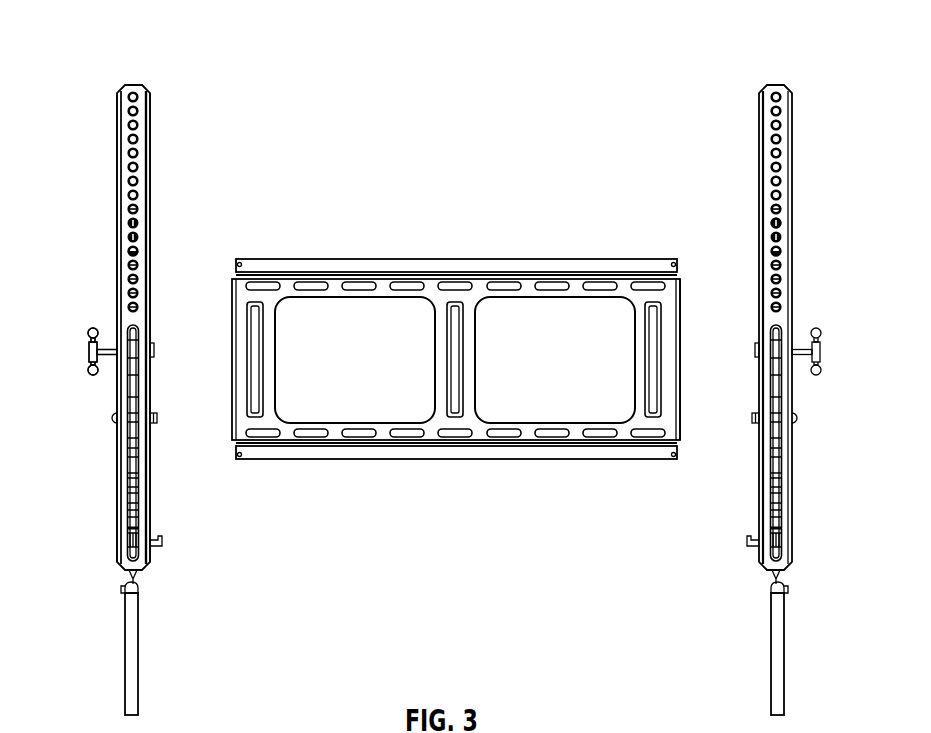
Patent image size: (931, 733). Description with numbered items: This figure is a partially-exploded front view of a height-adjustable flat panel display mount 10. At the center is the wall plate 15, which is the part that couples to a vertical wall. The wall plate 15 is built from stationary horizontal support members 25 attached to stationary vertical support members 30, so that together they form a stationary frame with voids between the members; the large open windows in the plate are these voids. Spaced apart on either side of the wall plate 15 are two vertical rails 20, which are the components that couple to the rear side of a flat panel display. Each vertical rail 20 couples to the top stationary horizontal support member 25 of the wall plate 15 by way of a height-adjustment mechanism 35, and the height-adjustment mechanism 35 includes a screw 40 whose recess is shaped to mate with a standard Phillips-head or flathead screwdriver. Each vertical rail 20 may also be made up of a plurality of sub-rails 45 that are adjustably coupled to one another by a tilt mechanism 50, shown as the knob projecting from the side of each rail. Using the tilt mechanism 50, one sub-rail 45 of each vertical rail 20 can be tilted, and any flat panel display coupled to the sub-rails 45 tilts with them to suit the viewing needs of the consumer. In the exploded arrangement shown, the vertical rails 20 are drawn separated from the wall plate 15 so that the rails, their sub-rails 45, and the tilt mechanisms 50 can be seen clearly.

The height-adjustable flat panel display mount 10 is at (160, 66).
The wall plate 15 is at (368, 246).
The vertical rail 20 is at (166, 163).
The stationary horizontal support member 25 is at (603, 316).
The stationary vertical support member 30 is at (689, 288).
The height-adjustment mechanism 35 is at (118, 224).
The screw 40 is at (766, 222).
The sub-rail 45 is at (150, 290).
The tilt mechanism 50 is at (92, 316).